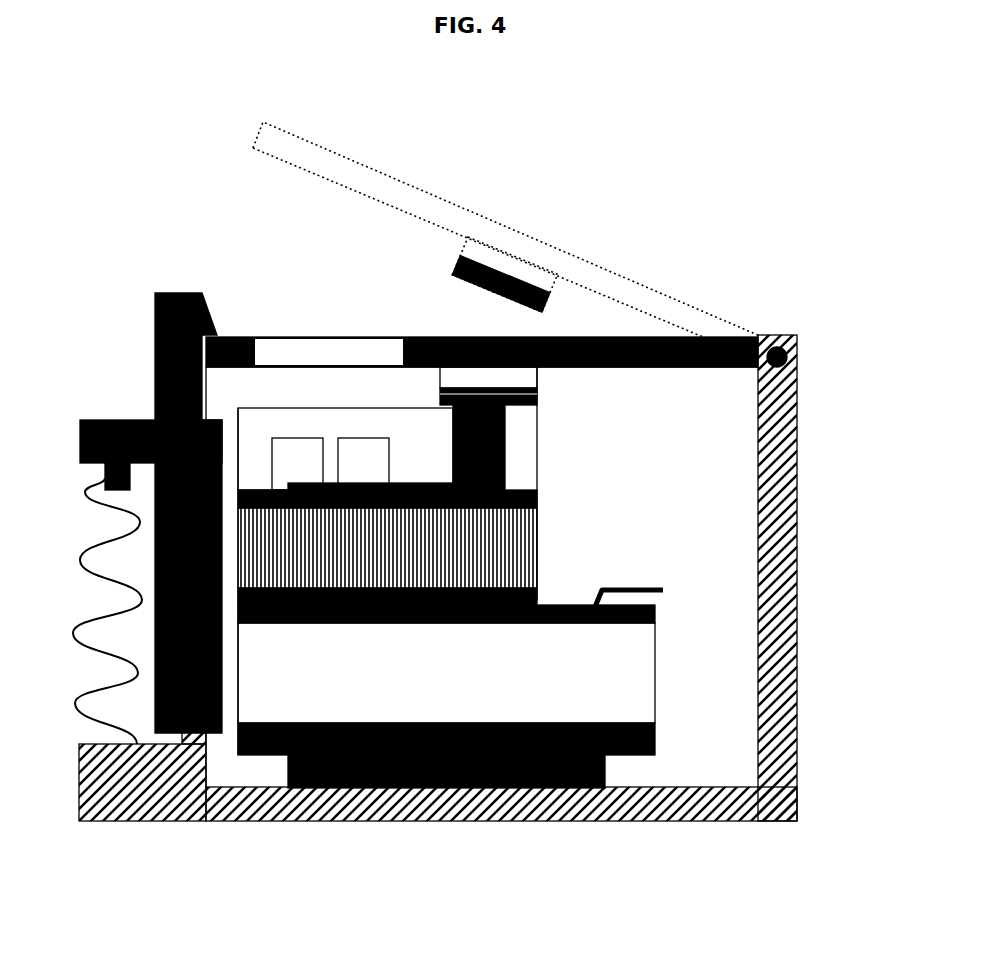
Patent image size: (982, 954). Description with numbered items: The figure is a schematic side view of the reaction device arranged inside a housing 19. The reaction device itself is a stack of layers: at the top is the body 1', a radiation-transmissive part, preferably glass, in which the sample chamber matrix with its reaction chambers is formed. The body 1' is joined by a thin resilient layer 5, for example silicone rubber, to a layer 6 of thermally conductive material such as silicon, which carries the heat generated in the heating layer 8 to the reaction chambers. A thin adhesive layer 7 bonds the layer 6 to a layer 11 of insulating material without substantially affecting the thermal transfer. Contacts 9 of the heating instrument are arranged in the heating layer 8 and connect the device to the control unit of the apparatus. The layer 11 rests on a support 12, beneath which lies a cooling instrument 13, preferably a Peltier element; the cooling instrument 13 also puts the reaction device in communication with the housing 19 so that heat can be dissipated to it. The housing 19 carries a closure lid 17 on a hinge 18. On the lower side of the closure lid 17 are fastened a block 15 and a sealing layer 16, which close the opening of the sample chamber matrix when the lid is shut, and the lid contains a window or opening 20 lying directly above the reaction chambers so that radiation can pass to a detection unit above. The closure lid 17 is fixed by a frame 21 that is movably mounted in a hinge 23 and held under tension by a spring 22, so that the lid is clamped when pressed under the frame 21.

The body 1' is at (436, 447).
The thin layer of resilient synthetic compound 5 is at (537, 503).
The layer of thermally conductive material 6 is at (537, 533).
The thin adhesive layer 7 is at (535, 595).
The heating layer 8 is at (655, 618).
The contacts of the heating instrument 9 is at (630, 587).
The layer of insulating material 11 is at (625, 671).
The support 12 is at (655, 737).
The cooling instrument 13 is at (605, 770).
The block 15 is at (530, 380).
The sealing layer 16 is at (525, 397).
The closure lid 17 is at (627, 283).
The hinge 18 is at (788, 357).
The housing 19 is at (797, 586).
The window or opening 20 is at (318, 351).
The frame 21 is at (155, 384).
The spring 22 is at (145, 591).
The hinge 23 is at (156, 723).